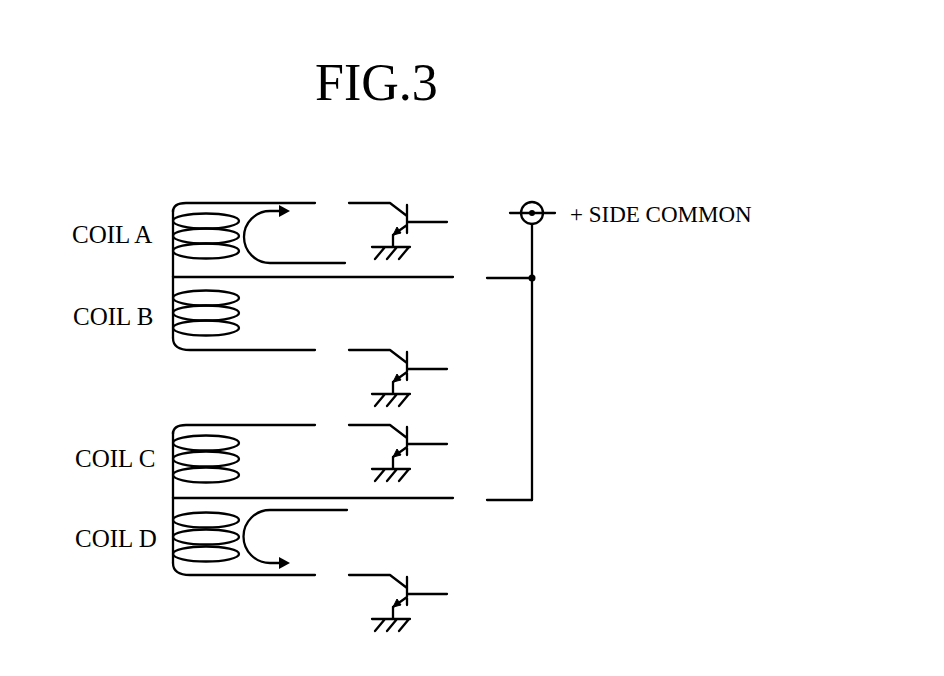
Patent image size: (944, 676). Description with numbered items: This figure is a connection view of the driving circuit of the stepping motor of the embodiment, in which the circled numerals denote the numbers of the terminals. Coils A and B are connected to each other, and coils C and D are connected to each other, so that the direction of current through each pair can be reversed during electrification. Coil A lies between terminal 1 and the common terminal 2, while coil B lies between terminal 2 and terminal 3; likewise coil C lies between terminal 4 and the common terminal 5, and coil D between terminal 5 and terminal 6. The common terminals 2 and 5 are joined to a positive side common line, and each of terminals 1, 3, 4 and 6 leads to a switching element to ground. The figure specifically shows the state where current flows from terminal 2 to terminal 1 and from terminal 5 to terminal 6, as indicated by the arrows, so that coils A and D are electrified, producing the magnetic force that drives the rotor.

The terminal number 1 is at (381, 222).
The terminal number 2 is at (352, 278).
The terminal number 3 is at (381, 369).
The terminal number 4 is at (381, 444).
The terminal number 5 is at (352, 500).
The terminal number 6 is at (381, 594).